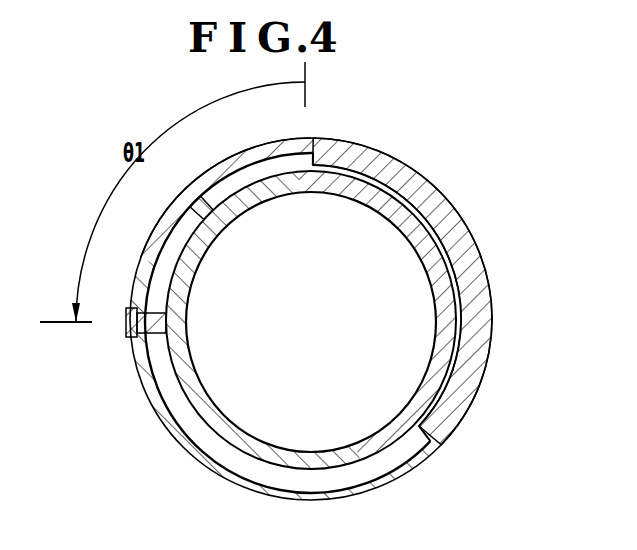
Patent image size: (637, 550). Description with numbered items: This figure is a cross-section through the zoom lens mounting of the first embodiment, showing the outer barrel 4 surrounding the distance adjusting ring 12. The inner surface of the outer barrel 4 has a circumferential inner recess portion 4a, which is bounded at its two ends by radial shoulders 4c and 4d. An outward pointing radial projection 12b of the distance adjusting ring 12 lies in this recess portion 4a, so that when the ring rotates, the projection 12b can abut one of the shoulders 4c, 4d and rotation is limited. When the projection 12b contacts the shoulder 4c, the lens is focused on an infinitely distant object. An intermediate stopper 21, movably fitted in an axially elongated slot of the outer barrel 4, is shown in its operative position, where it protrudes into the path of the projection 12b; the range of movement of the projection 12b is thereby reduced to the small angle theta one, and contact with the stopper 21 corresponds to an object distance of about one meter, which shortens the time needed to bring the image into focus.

The outer barrel 4 is at (412, 184).
The circumferential inner recess portion 4a is at (276, 158).
The radial shoulder 4c is at (318, 154).
The radial shoulder 4d is at (430, 428).
The distance adjusting ring 12 is at (217, 422).
The radial projection 12b is at (198, 200).
The intermediate stopper 21 is at (148, 342).